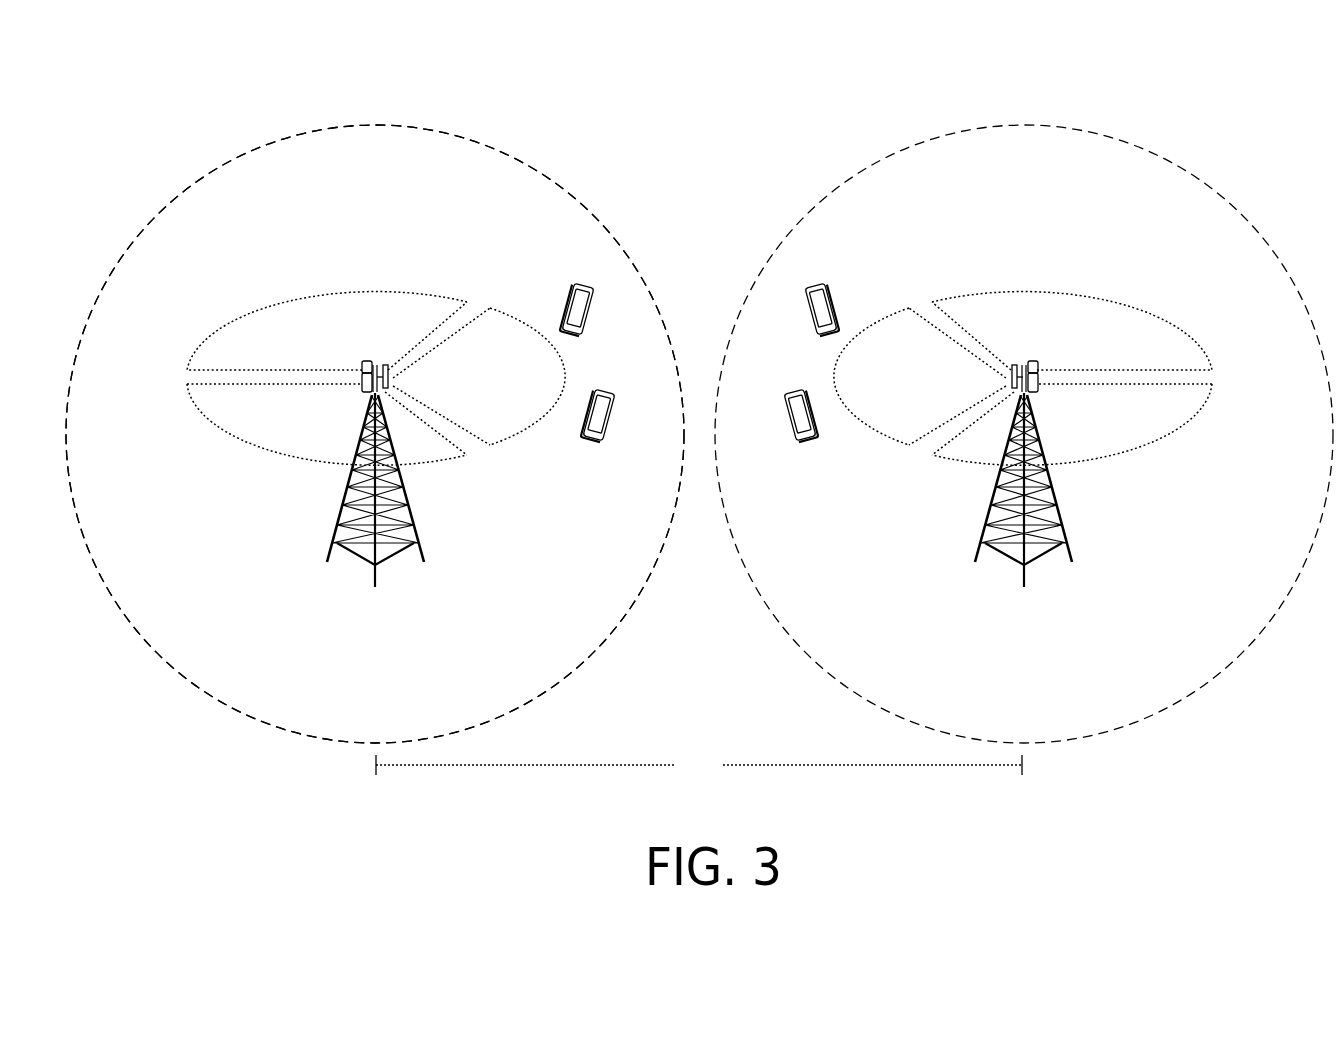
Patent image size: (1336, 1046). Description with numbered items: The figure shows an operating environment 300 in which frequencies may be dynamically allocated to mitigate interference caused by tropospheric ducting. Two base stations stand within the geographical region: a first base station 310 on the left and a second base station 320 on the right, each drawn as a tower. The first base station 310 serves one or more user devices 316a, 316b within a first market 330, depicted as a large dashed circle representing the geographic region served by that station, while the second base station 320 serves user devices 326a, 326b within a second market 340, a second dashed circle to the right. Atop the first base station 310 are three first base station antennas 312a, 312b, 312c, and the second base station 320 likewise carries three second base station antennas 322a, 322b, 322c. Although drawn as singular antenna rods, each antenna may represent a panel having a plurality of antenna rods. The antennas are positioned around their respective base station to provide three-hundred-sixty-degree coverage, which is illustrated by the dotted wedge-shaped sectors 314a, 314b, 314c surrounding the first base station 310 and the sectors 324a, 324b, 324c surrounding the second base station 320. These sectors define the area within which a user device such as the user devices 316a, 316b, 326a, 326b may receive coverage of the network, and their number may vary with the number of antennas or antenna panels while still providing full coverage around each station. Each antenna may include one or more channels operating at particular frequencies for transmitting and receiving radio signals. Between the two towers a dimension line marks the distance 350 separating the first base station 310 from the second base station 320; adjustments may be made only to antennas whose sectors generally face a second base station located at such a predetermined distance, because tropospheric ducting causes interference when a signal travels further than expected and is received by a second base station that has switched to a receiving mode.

The operating environment 300 is at (190, 106).
The first base station 310 is at (332, 558).
The first base station antenna 312a is at (389, 386).
The first base station antenna 312b is at (362, 392).
The first base station antenna 312c is at (362, 360).
The sector 314a is at (530, 428).
The sector 314b is at (195, 405).
The sector 314c is at (305, 293).
The user device 316a is at (574, 284).
The user device 316b is at (603, 440).
The second base station 320 is at (1067, 558).
The second base station antenna 322a is at (1012, 386).
The second base station antenna 322b is at (1038, 360).
The second base station antenna 322c is at (1038, 392).
The sector 324a is at (869, 428).
The sector 324b is at (1096, 294).
The sector 324c is at (1205, 405).
The user device 326a is at (826, 284).
The user device 326b is at (796, 440).
The first market 330 is at (228, 706).
The second market 340 is at (1172, 706).
The distance 350 is at (699, 766).